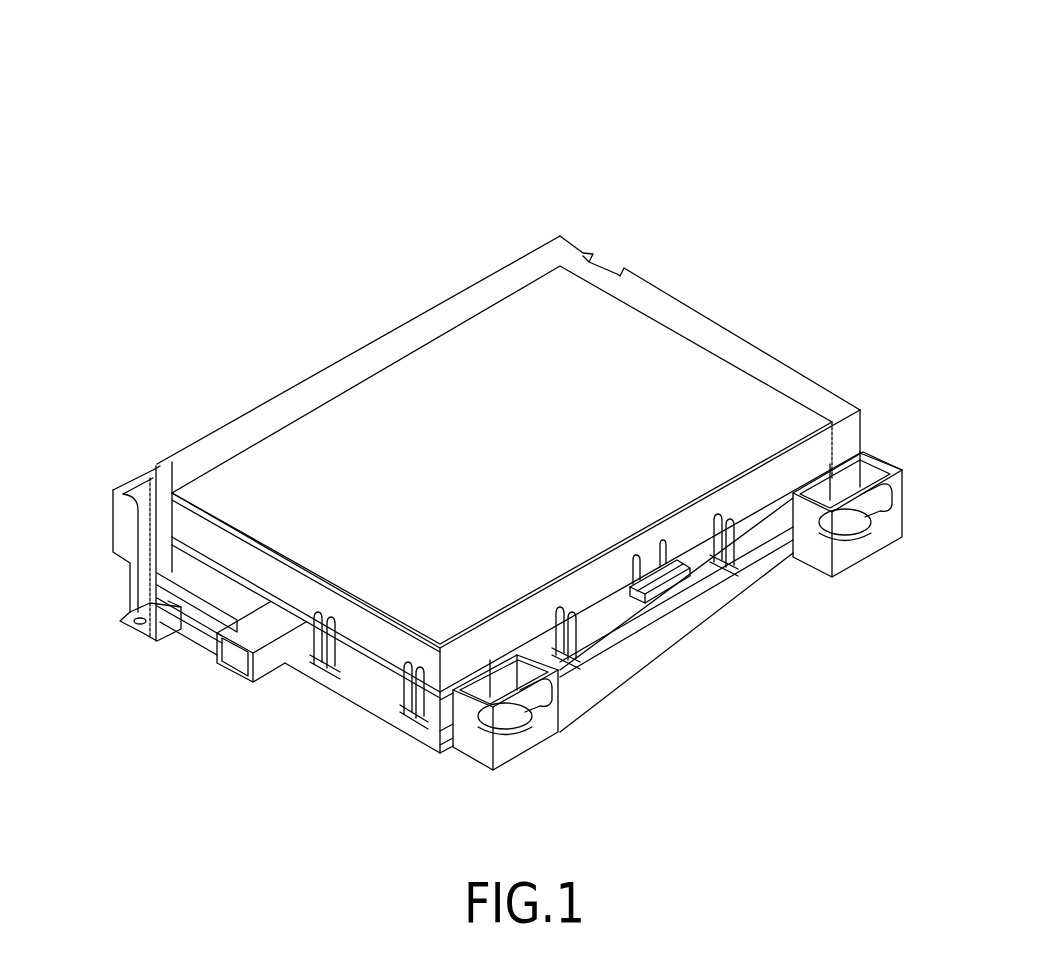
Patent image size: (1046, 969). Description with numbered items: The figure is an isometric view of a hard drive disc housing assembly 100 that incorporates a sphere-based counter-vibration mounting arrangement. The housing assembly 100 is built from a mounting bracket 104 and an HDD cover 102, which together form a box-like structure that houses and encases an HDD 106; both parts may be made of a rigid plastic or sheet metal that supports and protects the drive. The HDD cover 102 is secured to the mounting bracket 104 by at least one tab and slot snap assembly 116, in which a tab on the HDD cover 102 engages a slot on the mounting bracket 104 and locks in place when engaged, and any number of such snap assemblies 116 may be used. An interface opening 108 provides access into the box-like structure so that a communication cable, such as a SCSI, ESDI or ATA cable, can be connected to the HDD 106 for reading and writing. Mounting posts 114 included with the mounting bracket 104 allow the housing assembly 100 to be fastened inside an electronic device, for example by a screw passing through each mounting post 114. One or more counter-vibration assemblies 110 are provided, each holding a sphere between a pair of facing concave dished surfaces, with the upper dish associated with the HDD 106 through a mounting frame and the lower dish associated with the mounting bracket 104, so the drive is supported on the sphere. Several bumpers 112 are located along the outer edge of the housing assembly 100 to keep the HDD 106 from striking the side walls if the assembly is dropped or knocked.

The housing assembly 100 is at (418, 120).
The HDD cover 102 is at (732, 330).
The mounting bracket 104 is at (340, 698).
The HDD 106 is at (448, 363).
The interface opening 108 is at (240, 668).
The counter-vibration assembly 110 is at (526, 742).
The bumper 112 is at (412, 718).
The mounting post 114 is at (134, 626).
The tab and slot snap assembly 116 is at (665, 585).